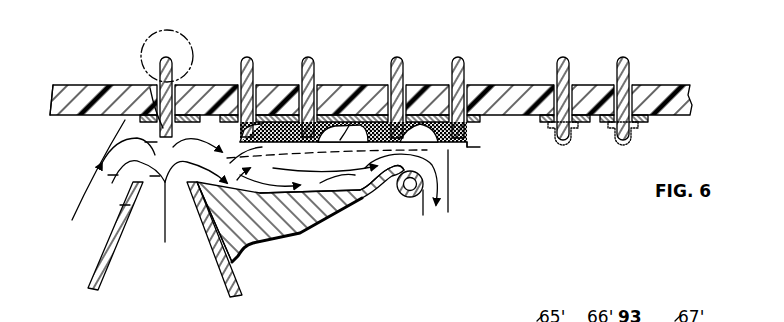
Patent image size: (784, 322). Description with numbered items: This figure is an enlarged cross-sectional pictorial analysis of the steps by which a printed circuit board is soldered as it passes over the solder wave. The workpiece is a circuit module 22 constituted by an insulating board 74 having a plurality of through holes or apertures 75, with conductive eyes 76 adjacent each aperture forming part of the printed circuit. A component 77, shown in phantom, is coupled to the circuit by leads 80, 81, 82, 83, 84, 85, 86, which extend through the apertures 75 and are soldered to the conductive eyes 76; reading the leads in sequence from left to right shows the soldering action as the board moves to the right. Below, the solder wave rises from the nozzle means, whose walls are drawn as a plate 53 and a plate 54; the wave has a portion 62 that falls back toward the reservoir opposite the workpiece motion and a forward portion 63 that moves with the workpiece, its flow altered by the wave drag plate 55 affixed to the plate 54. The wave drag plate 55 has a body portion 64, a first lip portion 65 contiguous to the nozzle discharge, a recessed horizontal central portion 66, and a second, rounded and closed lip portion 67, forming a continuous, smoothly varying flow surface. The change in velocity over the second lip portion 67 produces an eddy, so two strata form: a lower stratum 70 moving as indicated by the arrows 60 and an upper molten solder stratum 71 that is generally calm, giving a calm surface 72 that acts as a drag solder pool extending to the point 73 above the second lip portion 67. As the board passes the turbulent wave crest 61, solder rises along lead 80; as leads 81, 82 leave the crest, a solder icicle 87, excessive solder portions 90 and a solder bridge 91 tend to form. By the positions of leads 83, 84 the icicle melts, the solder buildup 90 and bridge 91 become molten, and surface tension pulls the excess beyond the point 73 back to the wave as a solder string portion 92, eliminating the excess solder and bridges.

The circuit module 22 is at (83, 88).
The insulating board 74 is at (55, 100).
The conductive eyes 76 is at (137, 118).
The forward portion 63 is at (193, 120).
The solder bridge 91 is at (272, 120).
The excessive solder portions 90 is at (323, 124).
The solder string portion 92 is at (447, 146).
The calm surface 72 is at (350, 124).
The lead 80 is at (167, 56).
The component 77 is at (189, 38).
The through holes or apertures 75 is at (150, 88).
The lead 81 is at (247, 57).
The lead 82 is at (309, 57).
The lead 83 is at (397, 57).
The lead 84 is at (459, 57).
The lead 85 is at (564, 57).
The lead 86 is at (624, 57).
The wave portion 62 is at (82, 192).
The turbulent wave crest 61 is at (135, 124).
The solder icicle 87 is at (253, 143).
The upper molten solder stratum 71 is at (327, 156).
The left vane 53 is at (97, 283).
The arrows 60 is at (165, 202).
The plate 54 is at (240, 298).
The wave drag plate 55 is at (268, 245).
The first lip portion 65 is at (213, 190).
The recessed horizontal central portion 66 is at (287, 191).
The body portion 64 is at (311, 209).
The lower stratum 70 is at (375, 197).
The second, rounded and closed lip portion 67 is at (392, 197).
The point 73 is at (448, 163).